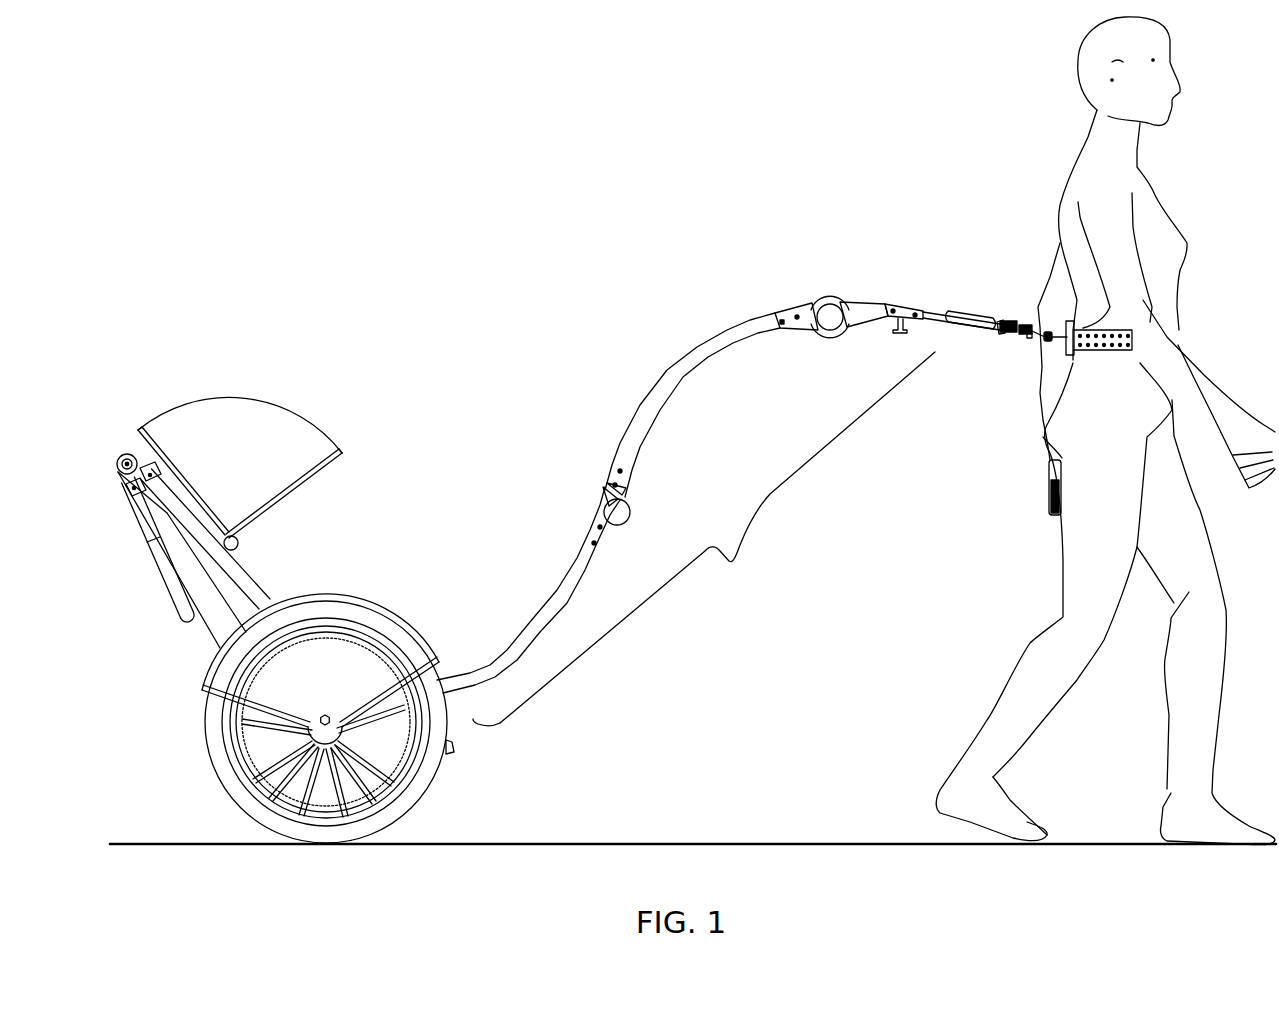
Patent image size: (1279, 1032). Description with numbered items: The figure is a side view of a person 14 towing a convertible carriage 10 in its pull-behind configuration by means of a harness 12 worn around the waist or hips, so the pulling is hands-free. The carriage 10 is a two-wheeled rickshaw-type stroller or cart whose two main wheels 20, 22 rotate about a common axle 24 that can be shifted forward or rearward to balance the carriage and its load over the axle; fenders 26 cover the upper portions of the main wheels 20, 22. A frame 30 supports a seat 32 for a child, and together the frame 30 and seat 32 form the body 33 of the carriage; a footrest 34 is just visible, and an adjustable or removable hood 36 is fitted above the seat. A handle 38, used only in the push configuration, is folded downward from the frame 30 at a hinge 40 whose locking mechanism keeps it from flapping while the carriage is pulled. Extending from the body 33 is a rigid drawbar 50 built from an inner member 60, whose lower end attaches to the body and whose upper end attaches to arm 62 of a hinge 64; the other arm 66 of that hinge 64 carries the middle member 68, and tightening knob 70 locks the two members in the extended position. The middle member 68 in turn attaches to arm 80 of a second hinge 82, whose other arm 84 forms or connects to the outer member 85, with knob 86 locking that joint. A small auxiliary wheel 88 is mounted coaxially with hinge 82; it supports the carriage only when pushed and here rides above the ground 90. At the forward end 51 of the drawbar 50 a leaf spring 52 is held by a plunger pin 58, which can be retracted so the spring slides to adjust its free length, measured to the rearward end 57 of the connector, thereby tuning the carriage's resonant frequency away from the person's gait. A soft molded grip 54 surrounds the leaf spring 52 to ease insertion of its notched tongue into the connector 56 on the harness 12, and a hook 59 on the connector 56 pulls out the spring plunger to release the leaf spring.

The convertible carriage 10 is at (413, 121).
The harness 12 is at (1108, 355).
The person 14 is at (1077, 60).
The main wheel 20 is at (219, 779).
The main wheel 22 is at (268, 753).
The axle 24 is at (325, 713).
The fender 26 is at (393, 615).
The frame 30 is at (260, 582).
The seat 32 is at (204, 617).
The body 33 is at (214, 641).
The footrest 34 is at (451, 755).
The hood 36 is at (314, 427).
The handle 38 is at (172, 599).
The hinge 40 is at (117, 463).
The drawbar 50 is at (704, 539).
The forward end 51 is at (923, 312).
The leaf spring 52 is at (941, 312).
The molded grip 54 is at (984, 315).
The connector 56 is at (1023, 332).
The rearward end 57 is at (1000, 330).
The plunger pin 58 is at (898, 333).
The hook 59 is at (1029, 338).
The inner member 60 is at (555, 597).
The arm 62 is at (597, 518).
The hinge 64 is at (556, 484).
The arm 66 is at (590, 473).
The middle member 68 is at (678, 365).
The knob 70 is at (633, 510).
The arm 80 is at (797, 303).
The hinge 82 is at (827, 286).
The arm 84 is at (857, 300).
The outer member 85 is at (886, 303).
The knob 86 is at (813, 333).
The auxiliary wheel 88 is at (830, 337).
The ground 90 is at (576, 843).